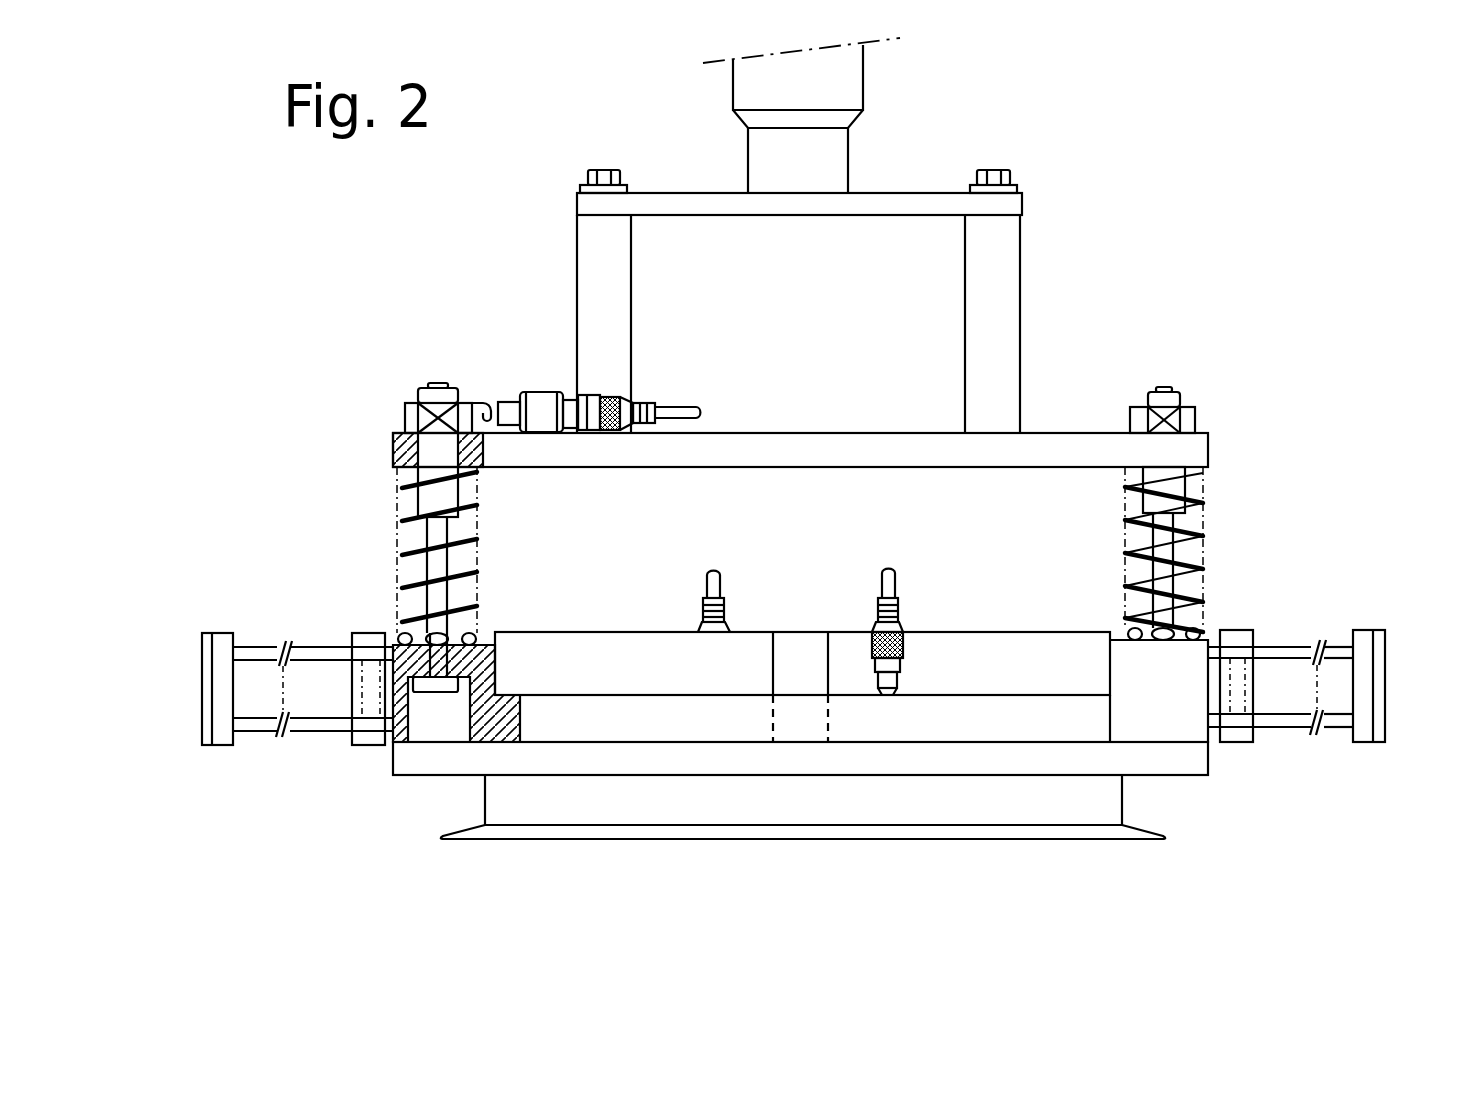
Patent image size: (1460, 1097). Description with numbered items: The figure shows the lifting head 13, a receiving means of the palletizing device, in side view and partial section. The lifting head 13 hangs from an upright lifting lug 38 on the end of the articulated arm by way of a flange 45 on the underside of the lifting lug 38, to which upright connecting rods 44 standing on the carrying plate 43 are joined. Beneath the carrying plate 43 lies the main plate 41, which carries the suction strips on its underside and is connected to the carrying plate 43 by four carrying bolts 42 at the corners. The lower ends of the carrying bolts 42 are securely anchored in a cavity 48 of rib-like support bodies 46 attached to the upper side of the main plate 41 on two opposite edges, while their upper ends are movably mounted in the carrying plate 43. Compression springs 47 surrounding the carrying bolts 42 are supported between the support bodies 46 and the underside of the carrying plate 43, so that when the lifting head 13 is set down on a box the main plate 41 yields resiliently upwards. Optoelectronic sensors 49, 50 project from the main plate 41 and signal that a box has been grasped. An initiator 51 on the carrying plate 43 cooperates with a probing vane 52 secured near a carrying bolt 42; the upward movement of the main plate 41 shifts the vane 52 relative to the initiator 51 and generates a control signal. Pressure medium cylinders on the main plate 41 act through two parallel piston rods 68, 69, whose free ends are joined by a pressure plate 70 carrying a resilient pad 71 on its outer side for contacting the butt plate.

The lifting head 13 is at (1178, 180).
The lifting lug 38 is at (845, 80).
The flange 45 is at (912, 202).
The connecting rods 44 is at (997, 325).
The carrying plate 43 is at (770, 442).
The probing vane 52 is at (483, 400).
The initiator 51 is at (547, 400).
The compression springs 47 is at (398, 490).
The carrying bolts 42 is at (398, 538).
The sensor 49 is at (727, 598).
The sensor 50 is at (900, 605).
The support bodies 46 is at (490, 712).
The cavity 48 is at (425, 720).
The main plate 41 is at (637, 760).
The pressure plate 70 is at (220, 632).
The piston rod 69 is at (250, 723).
The piston rod 68 is at (258, 647).
The resilient pad 71 is at (200, 673).